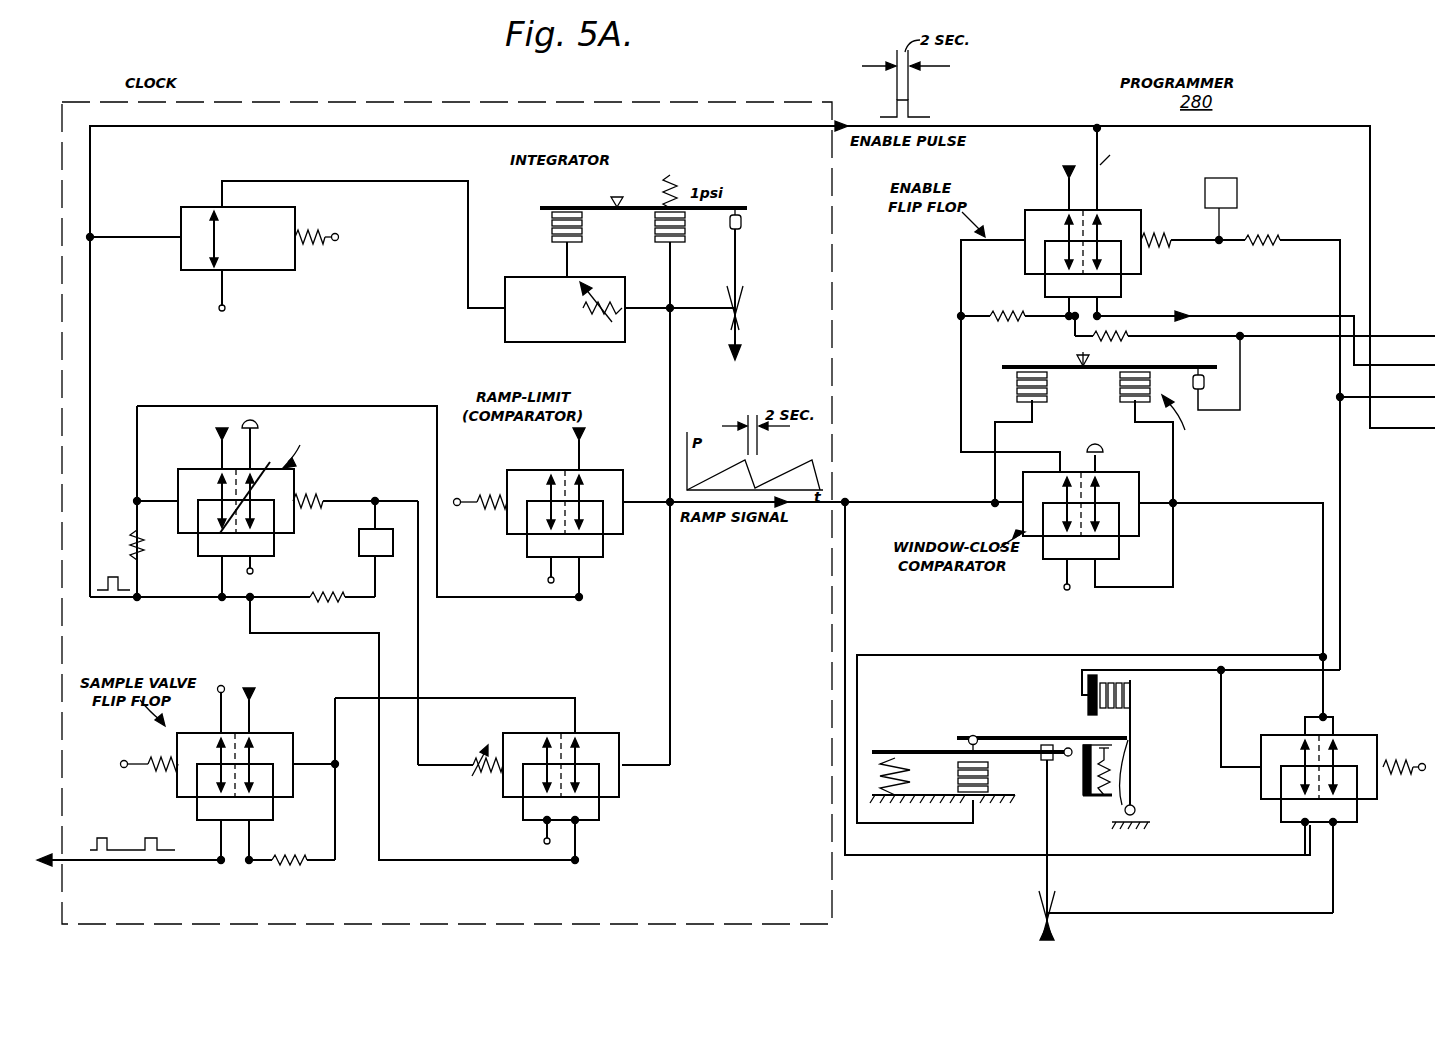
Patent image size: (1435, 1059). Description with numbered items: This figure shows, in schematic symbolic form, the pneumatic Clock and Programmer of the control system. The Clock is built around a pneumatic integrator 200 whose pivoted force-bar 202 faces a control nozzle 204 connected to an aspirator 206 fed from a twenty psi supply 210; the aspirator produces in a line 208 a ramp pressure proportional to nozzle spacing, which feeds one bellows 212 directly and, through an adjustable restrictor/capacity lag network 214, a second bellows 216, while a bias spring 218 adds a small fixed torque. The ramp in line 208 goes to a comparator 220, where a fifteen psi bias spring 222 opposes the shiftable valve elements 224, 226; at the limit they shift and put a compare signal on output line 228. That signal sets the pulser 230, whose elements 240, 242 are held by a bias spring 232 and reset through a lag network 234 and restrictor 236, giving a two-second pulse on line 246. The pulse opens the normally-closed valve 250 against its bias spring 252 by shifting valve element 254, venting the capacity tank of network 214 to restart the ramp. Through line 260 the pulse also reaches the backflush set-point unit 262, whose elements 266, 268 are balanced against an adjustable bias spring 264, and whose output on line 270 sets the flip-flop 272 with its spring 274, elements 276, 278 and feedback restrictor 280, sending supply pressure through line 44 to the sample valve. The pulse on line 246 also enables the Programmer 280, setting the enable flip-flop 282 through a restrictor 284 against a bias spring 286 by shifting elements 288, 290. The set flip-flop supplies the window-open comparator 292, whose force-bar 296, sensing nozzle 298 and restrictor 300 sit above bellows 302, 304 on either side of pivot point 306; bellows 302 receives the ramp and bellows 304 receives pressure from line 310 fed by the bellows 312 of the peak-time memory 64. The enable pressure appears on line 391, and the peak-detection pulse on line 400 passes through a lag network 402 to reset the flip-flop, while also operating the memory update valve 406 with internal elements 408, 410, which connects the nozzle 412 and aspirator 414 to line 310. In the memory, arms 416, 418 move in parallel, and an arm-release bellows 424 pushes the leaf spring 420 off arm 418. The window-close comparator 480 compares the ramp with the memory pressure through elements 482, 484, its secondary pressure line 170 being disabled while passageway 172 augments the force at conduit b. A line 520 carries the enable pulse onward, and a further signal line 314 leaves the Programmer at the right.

The line 44 is at (52, 868).
The peak-time memory device 64 is at (995, 715).
The secondary pressure line 170 is at (1030, 508).
The passageway 172 is at (1120, 520).
The pneumatic integrator 200 is at (568, 200).
The force-bar 202 is at (745, 205).
The control nozzle 204 is at (748, 225).
The aspirator 206 is at (745, 302).
The line 208 is at (672, 378).
The supply 210 is at (745, 352).
The bellows 212 is at (655, 222).
The adjustable restrictor/capacity lag network 214 is at (640, 362).
The bellows 216 is at (548, 222).
The bias spring 218 is at (680, 182).
The comparator 220 is at (603, 455).
The bias spring 222 is at (490, 510).
The shiftable valve element 224 is at (540, 485).
The shiftable valve element 226 is at (596, 485).
The output line 228 is at (582, 585).
The pulser 230 is at (356, 503).
The bias spring 232 is at (310, 490).
The restrictor/capacity lag network 234 is at (350, 552).
The restrictor 236 is at (112, 530).
The valve element 240 is at (183, 472).
The valve element 242 is at (270, 462).
The line 246 is at (335, 135).
The normally-closed valve 250 is at (160, 218).
The bias spring 252 is at (318, 228).
The valve element 254 is at (216, 236).
The line 260 is at (308, 630).
The backflush set-point unit 262 is at (508, 808).
The bias spring 264 is at (478, 775).
The shiftable element 266 is at (542, 748).
The shiftable element 268 is at (595, 748).
The line 270 is at (487, 697).
The flip-flop 272 is at (285, 720).
The bias spring 274 is at (155, 775).
The element 276 is at (215, 748).
The element 278 is at (262, 750).
The restrictor 280 is at (300, 832).
The enable flip-flop 282 is at (1138, 190).
The restrictor 284 is at (1010, 305).
The bias spring 286 is at (1160, 250).
The valve element 288 is at (1055, 228).
The valve element 290 is at (1115, 232).
The window-open comparator 292 is at (1050, 360).
The force-bar 296 is at (1180, 365).
The sensing nozzle 298 is at (1205, 385).
The restrictor 300 is at (1118, 346).
The bellows 302 is at (1017, 385).
The bellows 304 is at (1122, 395).
The pivot point 306 is at (1085, 368).
The line 310 is at (1258, 510).
The bellows 312 is at (978, 800).
The window-open signal line 314 is at (1385, 336).
The line 391 is at (1400, 365).
The line 400 is at (1390, 397).
The restrictor/capacity lag network 402 is at (1240, 180).
The memory update valve 406 is at (1358, 715).
The internal element 408 is at (1292, 752).
The internal element 410 is at (1340, 752).
The nozzle 412 is at (1050, 768).
The aspirator 414 is at (1057, 905).
The arm 416 is at (1010, 760).
The arm 418 is at (1080, 737).
The leaf spring 420 is at (1135, 725).
The arm-release bellows 424 is at (1110, 680).
The window-close comparator 480 is at (1035, 572).
The element 482 is at (1038, 472).
The element 484 is at (1105, 485).
The line 520 is at (1345, 128).